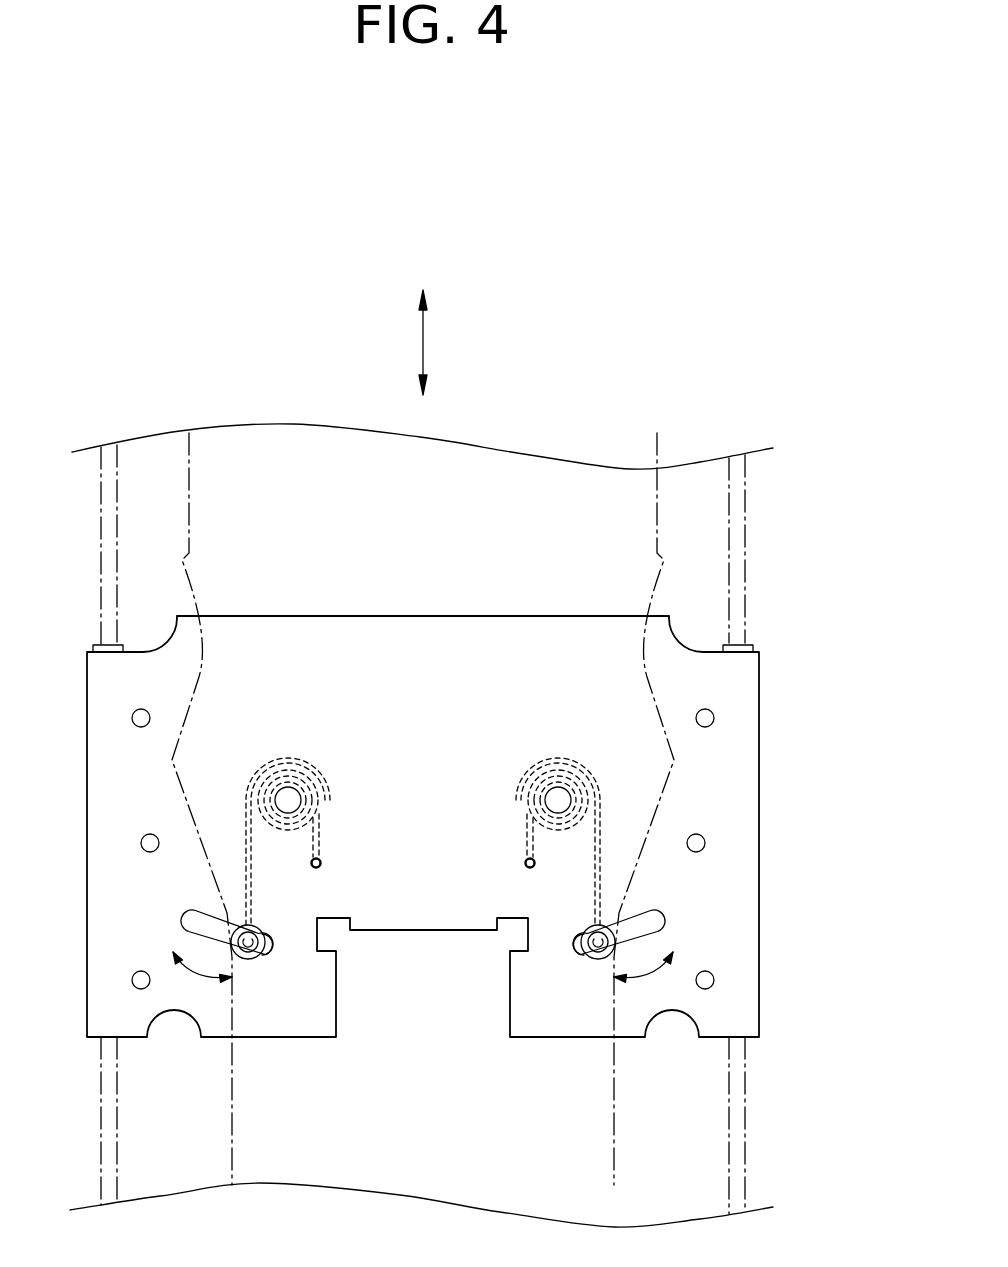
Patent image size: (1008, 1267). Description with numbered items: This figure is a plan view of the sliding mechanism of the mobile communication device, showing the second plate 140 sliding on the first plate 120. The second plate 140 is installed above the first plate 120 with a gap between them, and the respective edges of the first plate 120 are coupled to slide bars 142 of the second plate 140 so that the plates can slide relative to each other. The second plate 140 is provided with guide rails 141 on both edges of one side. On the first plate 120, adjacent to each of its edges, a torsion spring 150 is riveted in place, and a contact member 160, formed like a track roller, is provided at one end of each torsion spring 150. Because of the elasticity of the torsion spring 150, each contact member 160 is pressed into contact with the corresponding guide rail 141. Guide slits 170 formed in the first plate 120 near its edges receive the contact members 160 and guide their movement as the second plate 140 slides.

The first plate 120 is at (742, 737).
The second plate 140 is at (695, 603).
The guide rail 141 is at (659, 516).
The slide bar 142 is at (737, 578).
The torsion spring 150 is at (600, 781).
The contact member 160 is at (620, 947).
The guide slit 170 is at (650, 920).